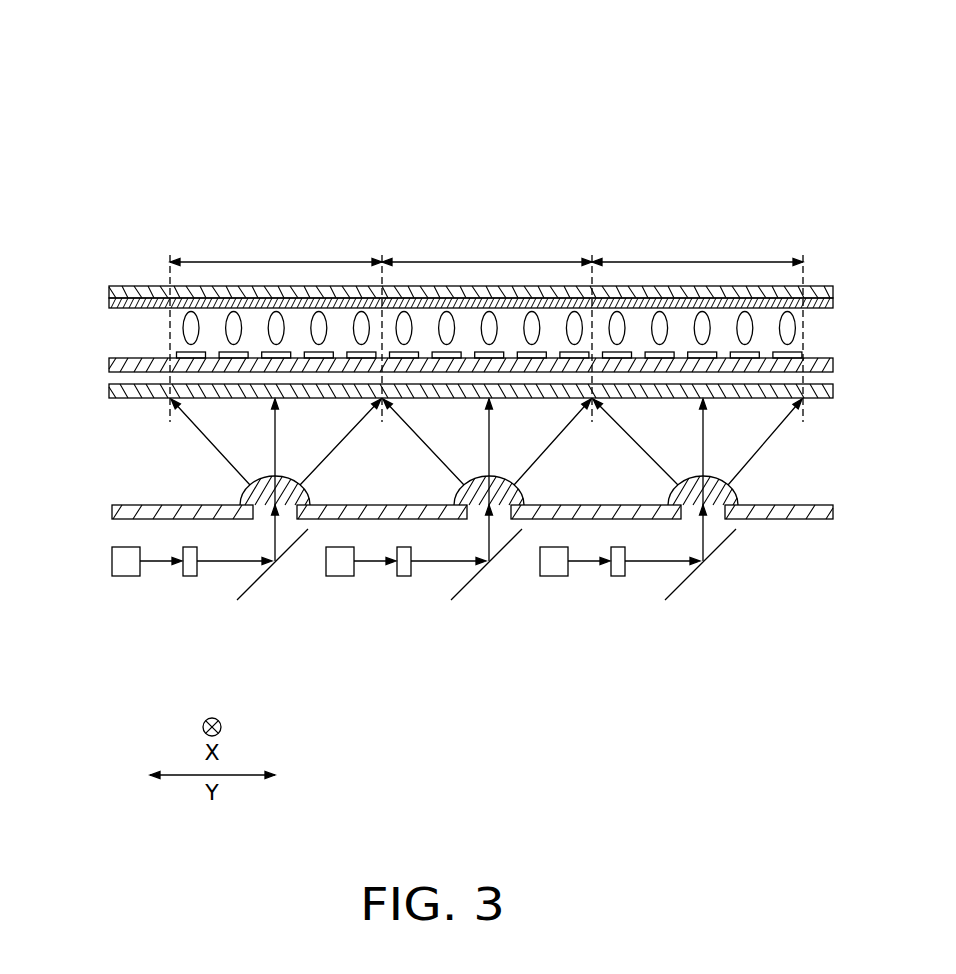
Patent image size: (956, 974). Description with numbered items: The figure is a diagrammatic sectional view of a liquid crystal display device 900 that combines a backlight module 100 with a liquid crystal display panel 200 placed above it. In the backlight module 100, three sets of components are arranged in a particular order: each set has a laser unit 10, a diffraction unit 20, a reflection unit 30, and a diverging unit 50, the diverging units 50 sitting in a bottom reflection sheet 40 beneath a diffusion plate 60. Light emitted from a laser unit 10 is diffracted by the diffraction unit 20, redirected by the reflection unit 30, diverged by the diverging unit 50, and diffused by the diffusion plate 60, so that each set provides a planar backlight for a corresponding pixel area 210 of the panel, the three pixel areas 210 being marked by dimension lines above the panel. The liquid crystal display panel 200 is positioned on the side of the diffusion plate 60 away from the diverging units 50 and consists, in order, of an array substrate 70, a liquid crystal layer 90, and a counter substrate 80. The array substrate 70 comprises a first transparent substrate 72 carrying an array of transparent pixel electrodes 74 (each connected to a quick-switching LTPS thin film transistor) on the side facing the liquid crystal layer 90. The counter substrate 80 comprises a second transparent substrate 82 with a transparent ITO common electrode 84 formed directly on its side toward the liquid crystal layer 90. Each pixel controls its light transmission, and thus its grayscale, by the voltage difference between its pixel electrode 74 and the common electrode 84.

The liquid crystal display device 900 is at (457, 90).
The display panel 200 is at (838, 377).
The pixel area 210 is at (486, 329).
The counter substrate 80 is at (106, 296).
The second transparent substrate 82 is at (127, 292).
The common electrode 84 is at (127, 306).
The liquid crystal layer 90 is at (806, 325).
The array substrate 70 is at (110, 377).
The pixel electrode 74 is at (177, 352).
The first transparent substrate 72 is at (128, 366).
The diffusion plate 60 is at (143, 396).
The backlight module 100 is at (750, 558).
The bottom reflection sheet 40 is at (150, 508).
The diverging unit 50 is at (253, 490).
The laser unit 10 is at (127, 568).
The diffraction unit 20 is at (188, 570).
The reflection unit 30 is at (256, 587).